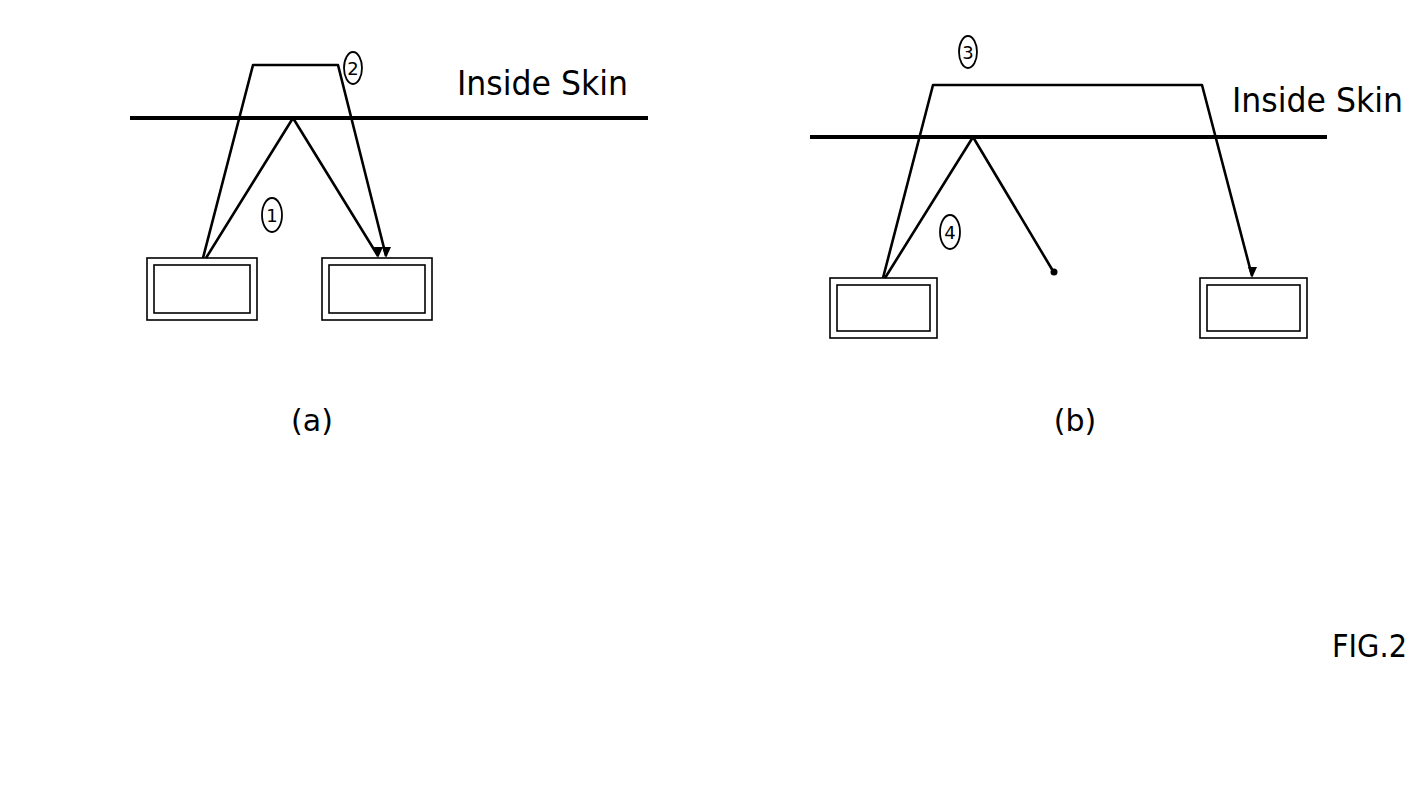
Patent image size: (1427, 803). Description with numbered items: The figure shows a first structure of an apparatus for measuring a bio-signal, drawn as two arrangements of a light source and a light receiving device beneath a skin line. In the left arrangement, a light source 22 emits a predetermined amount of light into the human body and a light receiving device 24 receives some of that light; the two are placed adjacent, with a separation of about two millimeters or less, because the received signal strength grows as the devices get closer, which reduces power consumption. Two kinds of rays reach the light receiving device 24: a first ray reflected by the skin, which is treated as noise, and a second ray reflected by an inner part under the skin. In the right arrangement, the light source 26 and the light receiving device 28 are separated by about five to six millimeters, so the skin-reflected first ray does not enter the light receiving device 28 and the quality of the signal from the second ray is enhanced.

The light source 22 is at (202, 323).
The light receiving device 24 is at (424, 323).
The light source 26 is at (888, 343).
The light receiving device 28 is at (1309, 272).